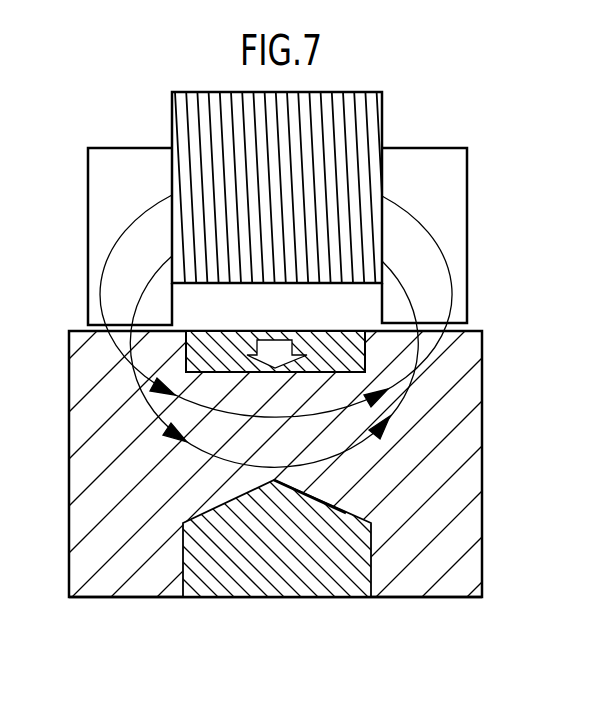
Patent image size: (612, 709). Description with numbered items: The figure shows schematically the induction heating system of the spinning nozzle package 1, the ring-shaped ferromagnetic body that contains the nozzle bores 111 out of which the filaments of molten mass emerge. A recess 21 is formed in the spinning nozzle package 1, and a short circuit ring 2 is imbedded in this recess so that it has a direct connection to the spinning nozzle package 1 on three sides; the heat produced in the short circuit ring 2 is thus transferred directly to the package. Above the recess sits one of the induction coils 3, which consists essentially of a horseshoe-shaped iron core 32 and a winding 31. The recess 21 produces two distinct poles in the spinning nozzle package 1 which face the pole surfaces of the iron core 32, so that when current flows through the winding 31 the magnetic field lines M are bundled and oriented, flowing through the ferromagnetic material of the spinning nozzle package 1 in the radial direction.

The spinning nozzle package 1 is at (443, 499).
The nozzle bores 111 is at (360, 598).
The short circuit ring 2 is at (332, 350).
The recess 21 is at (312, 373).
The induction coils 3 is at (318, 216).
The winding 31 is at (372, 112).
The horseshoe-shaped iron core 32 is at (445, 172).
The magnetic field lines M is at (112, 258).